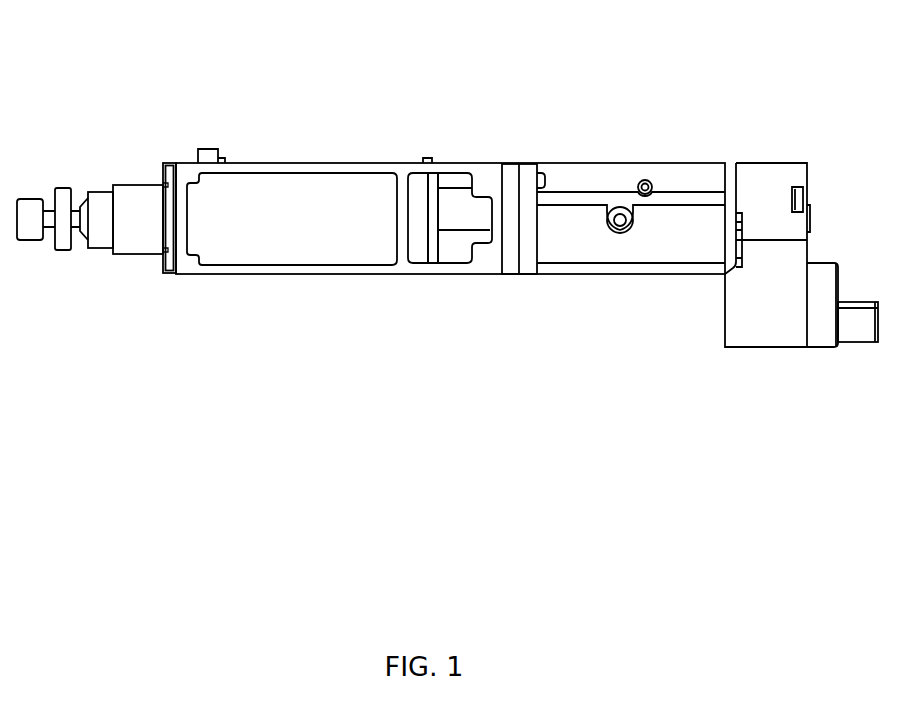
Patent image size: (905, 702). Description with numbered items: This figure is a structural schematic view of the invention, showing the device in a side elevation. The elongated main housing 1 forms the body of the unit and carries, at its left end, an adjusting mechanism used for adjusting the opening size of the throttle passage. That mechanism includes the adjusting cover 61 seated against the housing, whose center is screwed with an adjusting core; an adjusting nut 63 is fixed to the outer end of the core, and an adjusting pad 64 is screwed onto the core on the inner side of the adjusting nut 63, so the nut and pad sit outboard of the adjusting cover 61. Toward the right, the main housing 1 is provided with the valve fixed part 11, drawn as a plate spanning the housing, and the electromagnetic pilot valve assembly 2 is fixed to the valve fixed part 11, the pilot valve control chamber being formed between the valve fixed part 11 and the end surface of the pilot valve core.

The main housing 1 is at (290, 172).
The valve fixed part 11 is at (513, 205).
The electromagnetic pilot valve assembly 2 is at (672, 218).
The adjusting cover 61 is at (125, 210).
The adjusting nut 63 is at (28, 217).
The adjusting pad 64 is at (70, 245).